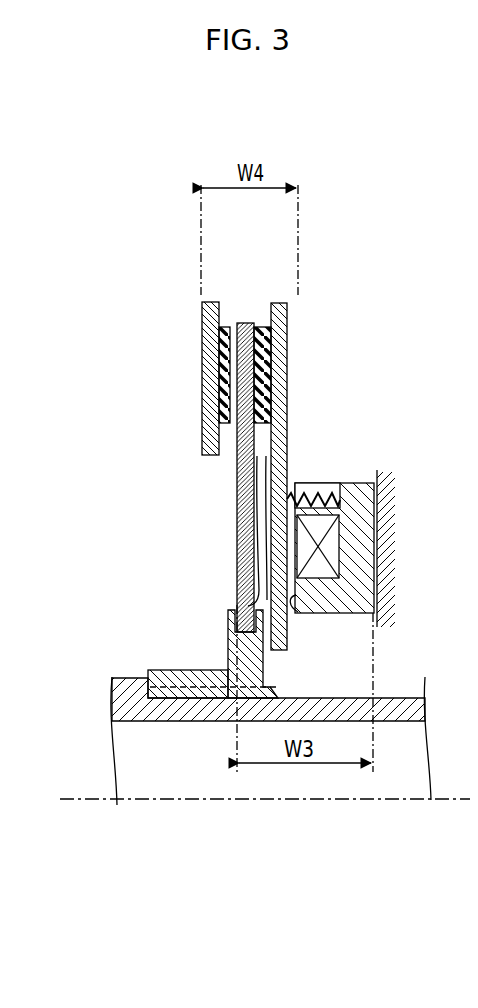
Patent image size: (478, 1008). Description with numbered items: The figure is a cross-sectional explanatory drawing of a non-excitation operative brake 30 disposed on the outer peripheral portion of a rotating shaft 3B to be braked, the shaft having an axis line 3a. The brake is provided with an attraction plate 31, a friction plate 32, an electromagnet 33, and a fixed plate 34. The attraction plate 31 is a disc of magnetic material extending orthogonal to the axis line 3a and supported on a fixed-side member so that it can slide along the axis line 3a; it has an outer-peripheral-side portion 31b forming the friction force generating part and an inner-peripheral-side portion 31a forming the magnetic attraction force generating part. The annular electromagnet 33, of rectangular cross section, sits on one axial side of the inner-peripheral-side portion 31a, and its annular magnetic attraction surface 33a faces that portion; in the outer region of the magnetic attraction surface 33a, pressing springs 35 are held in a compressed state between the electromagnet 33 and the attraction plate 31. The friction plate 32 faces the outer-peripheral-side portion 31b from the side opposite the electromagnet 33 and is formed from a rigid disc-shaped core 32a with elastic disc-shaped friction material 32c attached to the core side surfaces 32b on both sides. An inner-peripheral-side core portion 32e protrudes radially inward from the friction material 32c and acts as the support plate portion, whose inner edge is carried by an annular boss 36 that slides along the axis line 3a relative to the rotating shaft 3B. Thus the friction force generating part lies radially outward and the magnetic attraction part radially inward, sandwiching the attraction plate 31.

The non-excitation operative brake 30 is at (347, 308).
The attraction plate 31 is at (284, 300).
The inner-peripheral-side portion 31a is at (240, 600).
The outer-peripheral-side portion 31b is at (297, 300).
The friction plate 32 is at (246, 318).
The core 32a is at (244, 364).
The core side surfaces 32b is at (226, 325).
The friction material 32c is at (248, 400).
The inner-peripheral-side core portion 32e is at (229, 600).
The electromagnet 33 is at (364, 481).
The magnetic attraction surface 33a is at (294, 610).
The fixed plate 34 is at (194, 319).
The pressing springs 35 is at (319, 494).
The annular boss 36 is at (228, 657).
The rotating shaft 3B is at (118, 675).
The axis line 3a is at (73, 797).